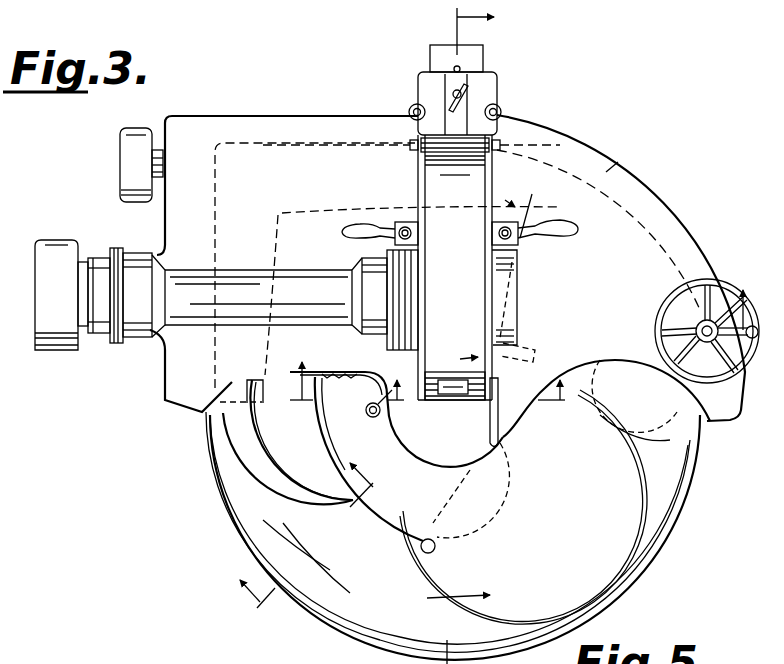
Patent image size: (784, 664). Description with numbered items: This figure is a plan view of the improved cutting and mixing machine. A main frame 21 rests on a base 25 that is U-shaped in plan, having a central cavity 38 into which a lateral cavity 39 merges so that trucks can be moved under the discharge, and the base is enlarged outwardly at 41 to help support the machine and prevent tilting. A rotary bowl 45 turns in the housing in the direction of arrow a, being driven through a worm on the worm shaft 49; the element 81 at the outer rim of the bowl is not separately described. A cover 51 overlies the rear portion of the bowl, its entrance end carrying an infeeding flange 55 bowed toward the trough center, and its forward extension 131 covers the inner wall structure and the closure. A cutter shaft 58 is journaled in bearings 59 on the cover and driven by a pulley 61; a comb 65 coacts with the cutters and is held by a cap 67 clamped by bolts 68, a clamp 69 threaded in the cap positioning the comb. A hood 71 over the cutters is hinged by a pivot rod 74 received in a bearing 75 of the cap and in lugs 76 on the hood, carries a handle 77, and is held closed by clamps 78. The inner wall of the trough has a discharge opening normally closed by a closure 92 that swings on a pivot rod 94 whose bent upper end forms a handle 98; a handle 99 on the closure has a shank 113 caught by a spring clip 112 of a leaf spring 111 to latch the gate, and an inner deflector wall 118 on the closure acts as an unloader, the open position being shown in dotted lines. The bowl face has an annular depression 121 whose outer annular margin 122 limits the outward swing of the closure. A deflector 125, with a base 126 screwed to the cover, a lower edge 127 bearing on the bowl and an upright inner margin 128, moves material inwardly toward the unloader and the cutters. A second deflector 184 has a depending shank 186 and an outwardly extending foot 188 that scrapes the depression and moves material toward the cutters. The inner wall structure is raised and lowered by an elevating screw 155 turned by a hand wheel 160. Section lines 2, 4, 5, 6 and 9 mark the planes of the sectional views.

The outward enlargement of base 41 is at (276, 150).
The main frame 21 is at (667, 181).
The cover 51 is at (609, 168).
The base 25 is at (647, 255).
The worm shaft 49 is at (160, 160).
The section line 6 is at (479, 334).
The comb 65 is at (473, 61).
The cap 67 is at (427, 85).
The clamp 69 is at (460, 98).
The bolts 68 is at (501, 113).
The hood 71 is at (433, 192).
The bearing 75 is at (437, 133).
The pivot rod 74 is at (501, 148).
The lugs 76 is at (490, 174).
The handle 77 is at (456, 398).
The clamps 78 is at (562, 213).
The section line 5 is at (488, 276).
The central cavity 38 is at (320, 217).
The foot 188 is at (504, 288).
The deflector 184 is at (505, 310).
The depending shank 186 is at (515, 352).
The handle 98 is at (503, 383).
The pivot rod 94 is at (490, 440).
The driving pulley 61 is at (58, 245).
The cutter shaft 58 is at (100, 310).
The bearings 59 is at (137, 258).
The hand wheel 160 is at (670, 300).
The elevating screw 155 is at (672, 320).
The section line 9 is at (519, 333).
The infeeding flange 55 is at (627, 378).
The lateral cavity 39 is at (670, 440).
The forward extension 131 is at (432, 466).
The leaf spring 111 is at (373, 386).
The handle 99 is at (381, 411).
The spring clip 112 is at (367, 414).
The shank 113 is at (375, 465).
The inner margin 128 is at (353, 502).
The lower edge 127 is at (258, 480).
The base 126 is at (254, 378).
The deflector 125 is at (240, 443).
The rotary bowl 45 is at (680, 510).
The disc rim 81 is at (600, 547).
The outer annular margin 122 is at (560, 487).
The annular depression 121 is at (567, 450).
The closure 92 is at (510, 468).
The inner deflector wall 118 is at (467, 496).
The section line 2 is at (483, 384).
The section line 4 is at (298, 528).
The arrow a is at (458, 603).